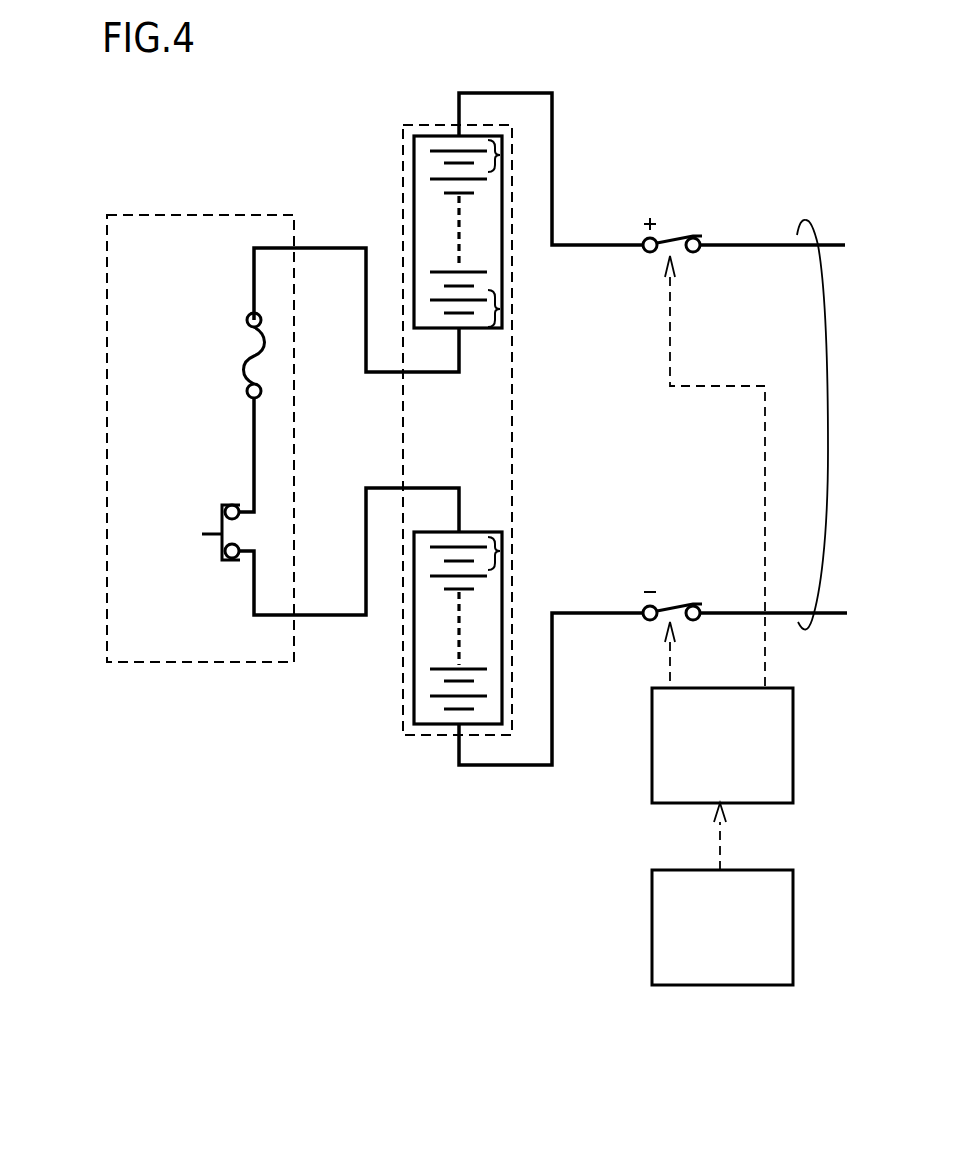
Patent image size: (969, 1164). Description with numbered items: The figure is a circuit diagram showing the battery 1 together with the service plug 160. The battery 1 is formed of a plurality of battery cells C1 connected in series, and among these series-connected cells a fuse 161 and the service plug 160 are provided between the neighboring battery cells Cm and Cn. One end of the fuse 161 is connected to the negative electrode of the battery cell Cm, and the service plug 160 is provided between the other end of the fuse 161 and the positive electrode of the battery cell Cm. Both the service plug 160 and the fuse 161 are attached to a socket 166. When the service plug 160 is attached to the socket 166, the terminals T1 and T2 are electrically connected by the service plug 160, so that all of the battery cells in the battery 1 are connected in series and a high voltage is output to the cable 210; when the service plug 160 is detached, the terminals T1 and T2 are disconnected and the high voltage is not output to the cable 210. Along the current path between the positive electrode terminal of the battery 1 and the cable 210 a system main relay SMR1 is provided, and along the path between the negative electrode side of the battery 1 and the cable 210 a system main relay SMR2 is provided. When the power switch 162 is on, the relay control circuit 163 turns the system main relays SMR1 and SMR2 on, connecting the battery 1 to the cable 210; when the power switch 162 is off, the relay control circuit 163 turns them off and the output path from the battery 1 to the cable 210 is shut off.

The battery 1 is at (403, 157).
The battery cell C1 is at (500, 155).
The battery cell Cm is at (500, 309).
The battery cell Cn is at (500, 551).
The socket 166 is at (107, 318).
The fuse 161 is at (254, 355).
The service plug 160 is at (222, 508).
The terminal T1 is at (222, 560).
The terminal T2 is at (226, 505).
The system main relay SMR1 is at (678, 224).
The system main relay SMR2 is at (678, 592).
The cable 210 is at (828, 450).
The relay control circuit 163 is at (793, 748).
The power switch 162 is at (793, 930).